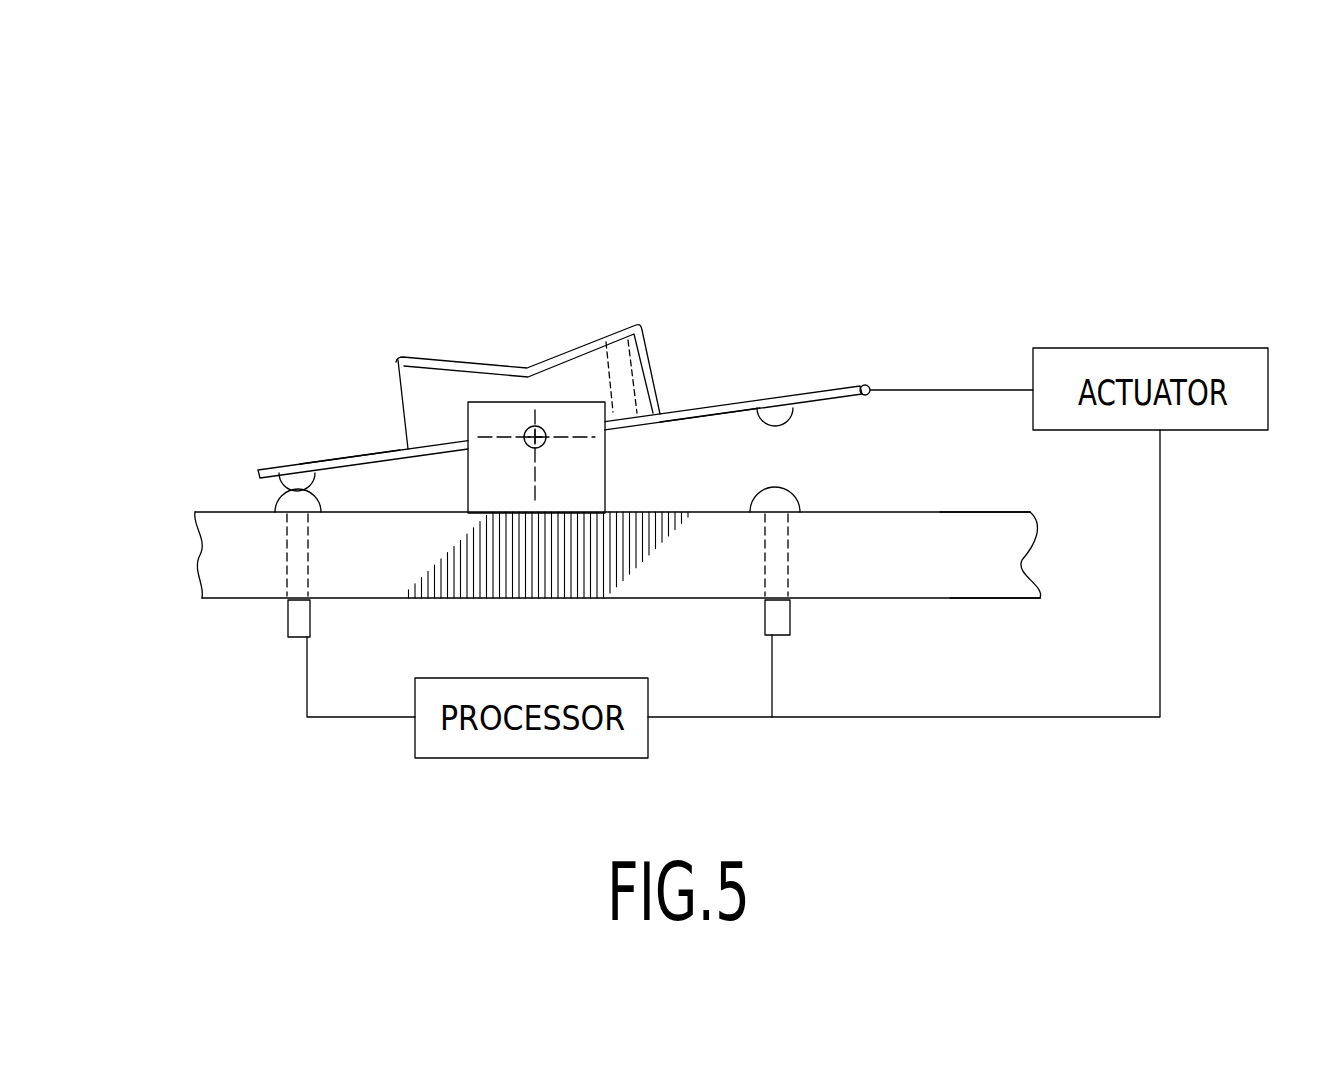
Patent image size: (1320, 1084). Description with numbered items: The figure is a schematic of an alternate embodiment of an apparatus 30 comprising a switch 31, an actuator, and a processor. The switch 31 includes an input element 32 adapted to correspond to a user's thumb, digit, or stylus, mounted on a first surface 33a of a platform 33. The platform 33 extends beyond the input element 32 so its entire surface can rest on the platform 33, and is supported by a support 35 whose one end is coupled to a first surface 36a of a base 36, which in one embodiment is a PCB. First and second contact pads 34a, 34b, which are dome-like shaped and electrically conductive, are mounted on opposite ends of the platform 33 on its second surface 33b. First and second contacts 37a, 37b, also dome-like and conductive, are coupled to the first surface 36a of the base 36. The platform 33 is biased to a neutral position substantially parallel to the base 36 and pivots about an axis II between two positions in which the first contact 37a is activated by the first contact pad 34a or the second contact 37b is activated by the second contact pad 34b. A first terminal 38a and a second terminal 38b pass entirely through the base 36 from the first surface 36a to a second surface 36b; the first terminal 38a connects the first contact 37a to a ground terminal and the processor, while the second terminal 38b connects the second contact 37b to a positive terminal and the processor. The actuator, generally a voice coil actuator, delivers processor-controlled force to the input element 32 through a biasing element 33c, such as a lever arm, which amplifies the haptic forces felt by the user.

The apparatus 30 is at (797, 210).
The switch 31 is at (338, 311).
The input element 32 is at (640, 330).
The platform 33 is at (837, 388).
The first surface of the platform 33a is at (353, 456).
The second surface of the platform 33b is at (712, 418).
The biasing element 33c is at (943, 388).
The first contact pad 34a is at (297, 475).
The second contact pad 34b is at (775, 408).
The support 35 is at (570, 420).
The base 36 is at (1040, 548).
The first surface of the base 36a is at (1003, 512).
The second surface of the base 36b is at (1020, 600).
The first contact 37a is at (277, 500).
The second contact 37b is at (785, 495).
The first terminal 38a is at (295, 613).
The second terminal 38b is at (781, 613).
The axis II is at (527, 428).